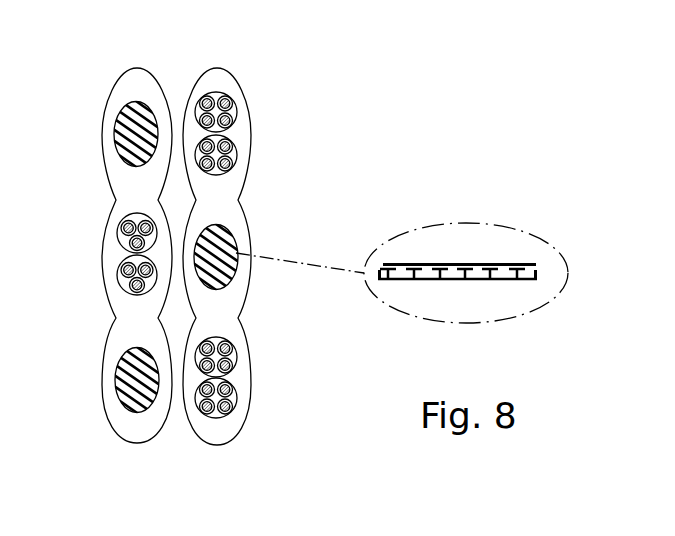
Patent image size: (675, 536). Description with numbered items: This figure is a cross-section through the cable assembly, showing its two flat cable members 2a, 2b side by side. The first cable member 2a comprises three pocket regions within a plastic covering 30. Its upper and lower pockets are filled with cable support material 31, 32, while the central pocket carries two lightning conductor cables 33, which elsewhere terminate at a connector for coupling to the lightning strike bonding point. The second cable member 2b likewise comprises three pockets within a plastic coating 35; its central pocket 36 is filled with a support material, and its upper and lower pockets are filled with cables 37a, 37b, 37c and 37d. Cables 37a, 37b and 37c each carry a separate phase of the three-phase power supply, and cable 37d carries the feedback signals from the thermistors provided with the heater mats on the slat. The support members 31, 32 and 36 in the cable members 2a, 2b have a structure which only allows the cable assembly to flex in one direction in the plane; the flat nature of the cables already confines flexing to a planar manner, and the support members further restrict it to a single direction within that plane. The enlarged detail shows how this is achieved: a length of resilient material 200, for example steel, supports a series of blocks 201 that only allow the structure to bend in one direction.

The flat cable member 2a is at (150, 62).
The second cable member 2b is at (234, 61).
The plastic covering 30 is at (122, 88).
The cable support material 31 is at (120, 136).
The cable support material 32 is at (117, 374).
The lightning conductor cables 33 is at (122, 233).
The plastic coating 35 is at (228, 427).
The central pocket 36 is at (236, 240).
The cable 37a is at (236, 113).
The cable 37b is at (238, 153).
The cable 37c is at (236, 349).
The cable 37d is at (237, 388).
The length of resilient material 200 is at (485, 264).
The blocks 201 is at (497, 279).